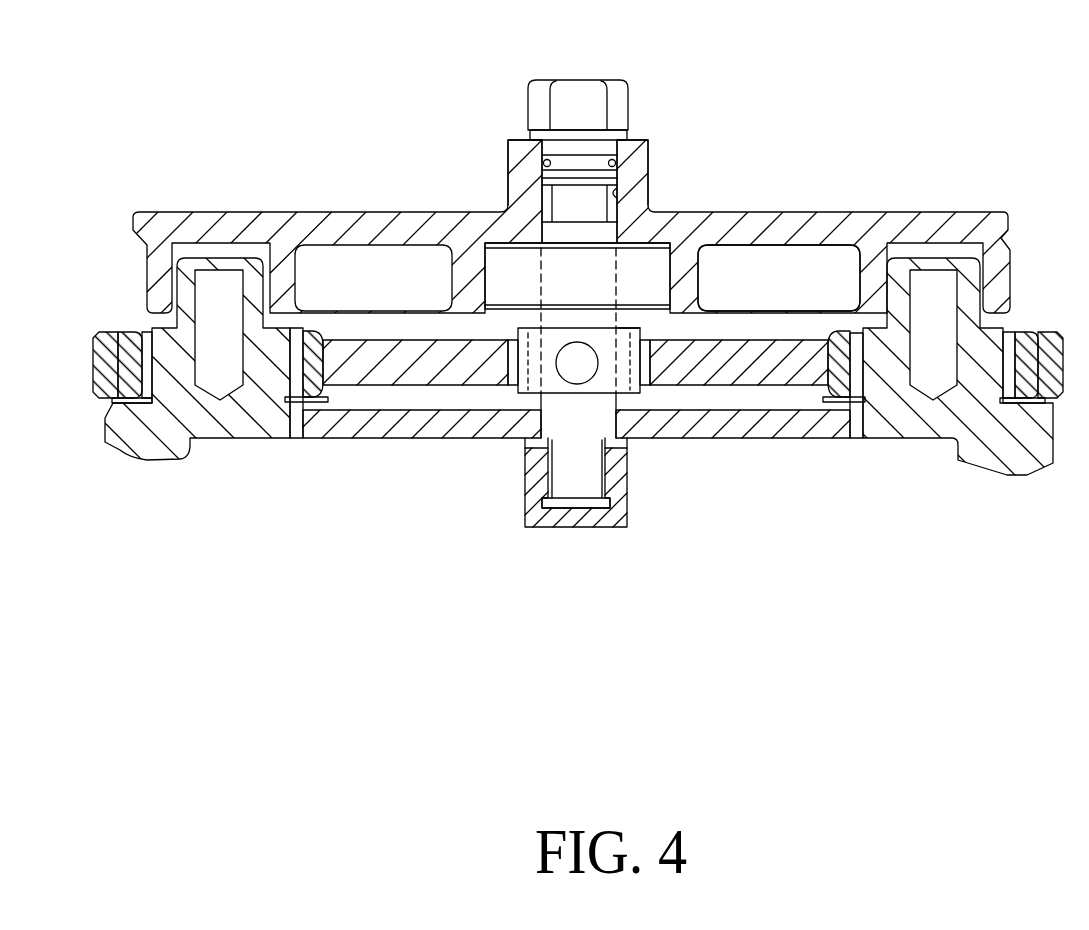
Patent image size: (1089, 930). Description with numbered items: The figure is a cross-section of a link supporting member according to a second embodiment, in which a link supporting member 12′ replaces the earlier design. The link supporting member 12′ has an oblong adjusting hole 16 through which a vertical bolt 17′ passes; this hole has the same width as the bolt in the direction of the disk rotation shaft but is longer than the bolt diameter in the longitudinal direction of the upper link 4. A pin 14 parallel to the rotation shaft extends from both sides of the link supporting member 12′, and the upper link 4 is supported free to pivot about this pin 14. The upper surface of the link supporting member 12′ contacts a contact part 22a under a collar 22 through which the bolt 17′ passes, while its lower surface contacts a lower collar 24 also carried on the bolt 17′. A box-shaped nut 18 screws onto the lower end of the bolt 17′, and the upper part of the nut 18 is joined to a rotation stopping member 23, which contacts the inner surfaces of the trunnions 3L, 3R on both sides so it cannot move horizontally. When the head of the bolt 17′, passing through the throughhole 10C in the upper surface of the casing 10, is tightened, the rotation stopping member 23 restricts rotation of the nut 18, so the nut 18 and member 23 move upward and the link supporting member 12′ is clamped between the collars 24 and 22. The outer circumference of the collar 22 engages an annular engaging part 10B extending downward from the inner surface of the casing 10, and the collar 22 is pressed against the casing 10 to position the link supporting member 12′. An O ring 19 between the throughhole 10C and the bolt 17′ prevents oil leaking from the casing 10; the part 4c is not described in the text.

The casing 10 is at (732, 206).
The annular engaging part 10B is at (703, 297).
The throughhole 10C is at (617, 206).
The bolt 17′ is at (595, 88).
The O ring 19 is at (618, 163).
The collar 22 is at (530, 257).
The contact part 22a is at (632, 326).
The pin 14 is at (565, 345).
The oblong adjusting hole 16 is at (533, 384).
The link supporting member 12′ is at (520, 340).
The bolt shank 4c is at (597, 403).
The upper link 4 is at (365, 340).
The rotation stopping member 23 is at (380, 434).
The box-shaped nut 18 is at (613, 527).
The collar 24 is at (627, 450).
The trunnion 3L is at (155, 328).
The trunnion 3R is at (978, 345).